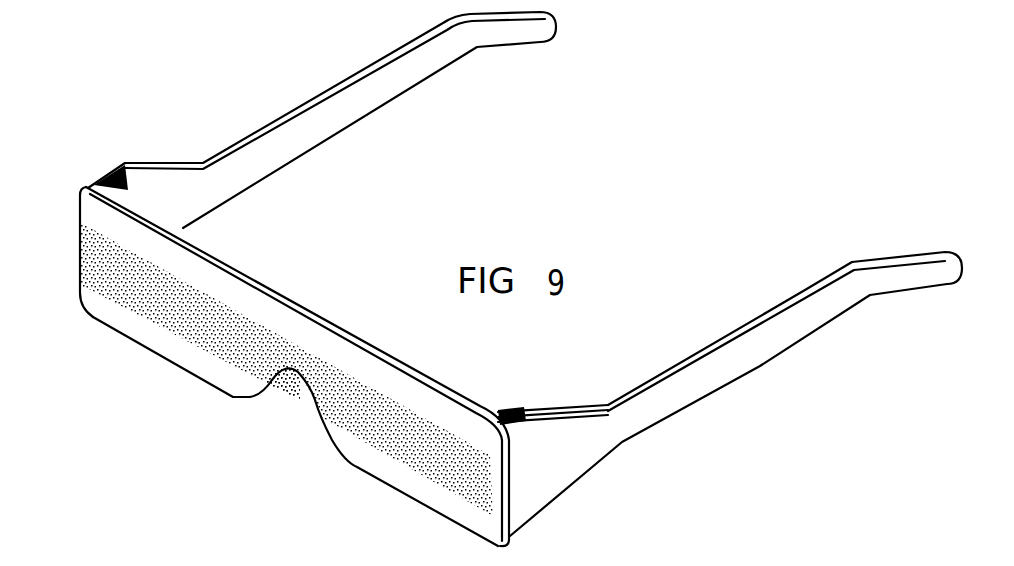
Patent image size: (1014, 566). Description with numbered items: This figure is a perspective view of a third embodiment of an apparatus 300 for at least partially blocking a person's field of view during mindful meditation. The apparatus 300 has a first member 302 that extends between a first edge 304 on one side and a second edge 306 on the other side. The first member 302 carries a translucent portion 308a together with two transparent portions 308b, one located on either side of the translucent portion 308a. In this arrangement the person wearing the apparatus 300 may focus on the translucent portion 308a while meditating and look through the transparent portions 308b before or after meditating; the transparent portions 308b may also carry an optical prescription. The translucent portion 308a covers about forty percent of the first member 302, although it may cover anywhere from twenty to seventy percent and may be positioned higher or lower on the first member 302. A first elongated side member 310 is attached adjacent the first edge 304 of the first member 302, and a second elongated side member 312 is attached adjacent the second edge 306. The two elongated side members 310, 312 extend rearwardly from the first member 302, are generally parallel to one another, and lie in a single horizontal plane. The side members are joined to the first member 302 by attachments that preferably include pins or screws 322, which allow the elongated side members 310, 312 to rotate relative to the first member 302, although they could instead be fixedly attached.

The apparatus 300 is at (782, 383).
The first member 302 is at (172, 367).
The first edge 304 is at (73, 250).
The second edge 306 is at (508, 537).
The translucent portion 308a is at (197, 313).
The transparent portions 308b is at (427, 398).
The first elongated side member 310 is at (281, 113).
The second elongated side member 312 is at (803, 290).
The pins or screws 322 is at (500, 410).